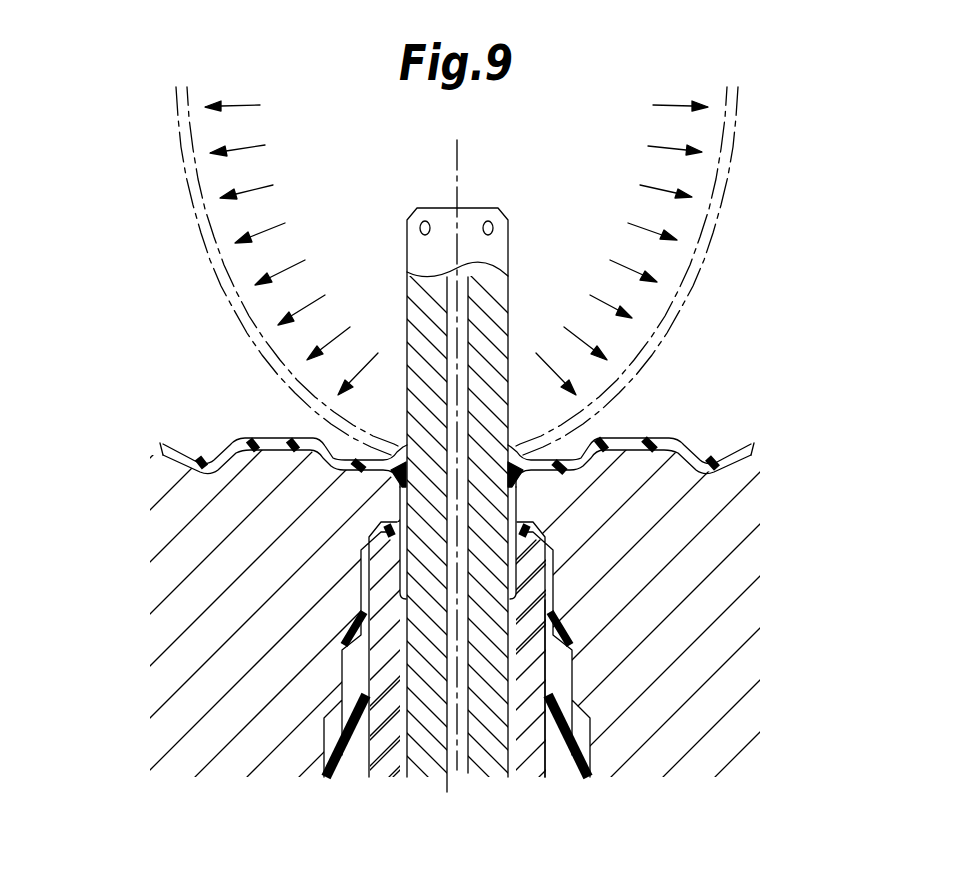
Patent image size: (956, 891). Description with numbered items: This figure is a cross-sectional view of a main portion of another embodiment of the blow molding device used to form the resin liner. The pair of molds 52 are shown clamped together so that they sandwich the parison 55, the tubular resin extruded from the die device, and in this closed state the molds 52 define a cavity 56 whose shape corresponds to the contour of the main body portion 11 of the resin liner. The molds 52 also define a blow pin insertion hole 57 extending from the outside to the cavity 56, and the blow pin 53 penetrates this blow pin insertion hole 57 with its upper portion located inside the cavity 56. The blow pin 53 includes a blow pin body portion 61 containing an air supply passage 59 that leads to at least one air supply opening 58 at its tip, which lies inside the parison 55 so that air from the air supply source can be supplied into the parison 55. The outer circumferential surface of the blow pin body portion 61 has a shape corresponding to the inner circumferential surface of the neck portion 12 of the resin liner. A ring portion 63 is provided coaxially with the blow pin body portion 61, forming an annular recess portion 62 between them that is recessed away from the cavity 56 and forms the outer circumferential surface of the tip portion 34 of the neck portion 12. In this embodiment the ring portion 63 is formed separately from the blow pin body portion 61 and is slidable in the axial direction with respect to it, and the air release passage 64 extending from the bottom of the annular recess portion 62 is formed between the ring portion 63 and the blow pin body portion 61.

The main body portion 11 is at (256, 440).
The neck portion 12 is at (400, 512).
The tip portion 34 is at (372, 540).
The molds 52 is at (197, 752).
The blow pin 53 is at (514, 203).
The parison 55 is at (193, 208).
The cavity 56 is at (329, 148).
The blow pin insertion hole 57 is at (575, 771).
The air supply opening 58 is at (424, 221).
The air supply passage 59 is at (452, 310).
The blow pin body portion 61 is at (486, 771).
The annular recess portion 62 is at (520, 560).
The ring portion 63 is at (532, 771).
The air release passage 64 is at (400, 768).